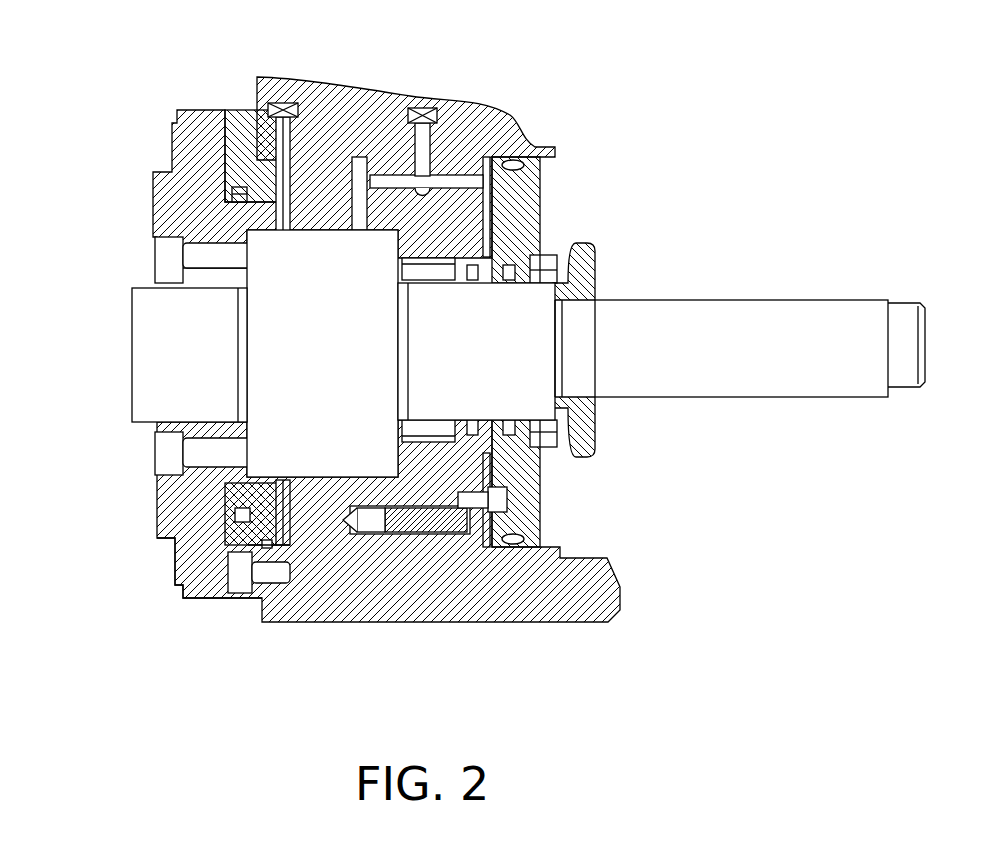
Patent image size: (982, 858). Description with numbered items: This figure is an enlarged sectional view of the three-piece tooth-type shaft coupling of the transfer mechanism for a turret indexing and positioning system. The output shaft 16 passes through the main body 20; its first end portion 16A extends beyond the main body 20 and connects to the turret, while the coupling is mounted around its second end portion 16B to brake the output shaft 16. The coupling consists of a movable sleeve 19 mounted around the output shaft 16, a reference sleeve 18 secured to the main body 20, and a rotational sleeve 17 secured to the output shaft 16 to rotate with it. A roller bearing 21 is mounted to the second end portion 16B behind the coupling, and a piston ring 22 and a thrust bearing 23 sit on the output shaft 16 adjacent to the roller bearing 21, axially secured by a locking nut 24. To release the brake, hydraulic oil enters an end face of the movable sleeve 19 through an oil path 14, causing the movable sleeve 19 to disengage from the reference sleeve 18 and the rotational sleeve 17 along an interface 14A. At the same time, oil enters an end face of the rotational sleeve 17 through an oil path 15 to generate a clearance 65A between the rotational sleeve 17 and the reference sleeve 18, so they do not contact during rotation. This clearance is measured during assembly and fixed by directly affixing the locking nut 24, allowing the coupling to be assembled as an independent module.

The oil path 14 is at (430, 103).
The interface 14A is at (270, 208).
The oil path 15 is at (283, 103).
The output shaft 16 is at (264, 320).
The first end portion 16A is at (132, 385).
The second end portion 16B is at (748, 400).
The rotational sleeve 17 is at (203, 500).
The reference sleeve 18 is at (227, 533).
The movable sleeve 19 is at (260, 624).
The main body 20 is at (385, 567).
The roller bearing 21 is at (432, 442).
The piston ring 22 is at (493, 550).
The thrust bearing 23 is at (562, 452).
The locking nut 24 is at (600, 453).
The clearance 65A is at (222, 138).